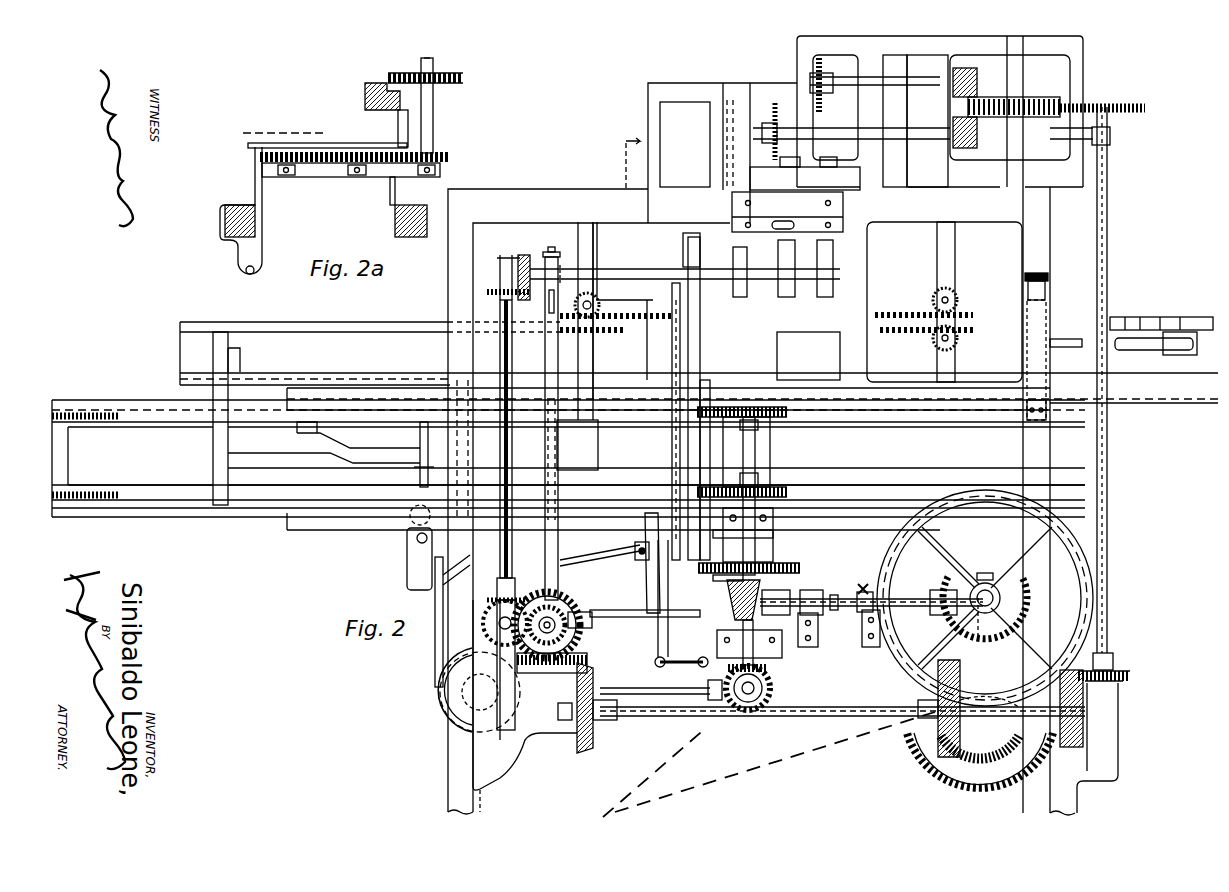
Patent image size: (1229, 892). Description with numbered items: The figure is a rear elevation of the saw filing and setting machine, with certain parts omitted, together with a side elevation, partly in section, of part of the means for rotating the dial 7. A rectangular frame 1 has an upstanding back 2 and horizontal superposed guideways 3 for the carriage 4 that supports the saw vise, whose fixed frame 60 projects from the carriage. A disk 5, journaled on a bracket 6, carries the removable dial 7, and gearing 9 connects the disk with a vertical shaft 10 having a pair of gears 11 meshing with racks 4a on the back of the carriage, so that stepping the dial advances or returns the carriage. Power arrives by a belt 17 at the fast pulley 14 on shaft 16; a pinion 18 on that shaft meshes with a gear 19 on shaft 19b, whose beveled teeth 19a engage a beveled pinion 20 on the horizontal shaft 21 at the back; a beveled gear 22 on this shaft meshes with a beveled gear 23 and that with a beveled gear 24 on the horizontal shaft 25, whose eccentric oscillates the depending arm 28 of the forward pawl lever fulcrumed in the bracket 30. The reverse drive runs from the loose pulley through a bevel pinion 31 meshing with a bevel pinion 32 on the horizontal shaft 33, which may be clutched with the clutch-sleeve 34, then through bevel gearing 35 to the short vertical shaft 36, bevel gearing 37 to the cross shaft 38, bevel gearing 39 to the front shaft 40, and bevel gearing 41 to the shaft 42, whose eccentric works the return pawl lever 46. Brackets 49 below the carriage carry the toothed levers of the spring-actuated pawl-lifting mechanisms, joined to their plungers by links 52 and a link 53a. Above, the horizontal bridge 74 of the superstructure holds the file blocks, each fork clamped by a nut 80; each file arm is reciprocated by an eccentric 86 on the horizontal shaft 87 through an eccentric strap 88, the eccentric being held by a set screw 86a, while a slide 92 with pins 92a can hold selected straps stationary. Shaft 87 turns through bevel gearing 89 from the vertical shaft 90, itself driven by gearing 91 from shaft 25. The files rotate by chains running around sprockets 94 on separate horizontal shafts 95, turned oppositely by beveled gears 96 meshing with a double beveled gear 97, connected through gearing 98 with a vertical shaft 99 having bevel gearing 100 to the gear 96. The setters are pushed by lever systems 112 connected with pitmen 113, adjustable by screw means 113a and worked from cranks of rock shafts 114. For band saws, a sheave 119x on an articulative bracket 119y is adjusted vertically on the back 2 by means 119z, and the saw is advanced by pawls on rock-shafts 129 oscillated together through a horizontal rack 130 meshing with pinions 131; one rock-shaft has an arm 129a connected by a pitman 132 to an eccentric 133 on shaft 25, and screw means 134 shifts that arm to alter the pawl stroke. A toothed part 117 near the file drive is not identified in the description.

In FIG. 2A, the rectangular frame 1 is at (255, 227).
In FIG. 2, the rectangular frame 1 is at (440, 597).
In FIG. 2, the upstanding back 2 is at (595, 192).
In FIG. 2A, the horizontal superposed guideways 3 is at (377, 108).
In FIG. 2, the carriage 4 is at (154, 514).
In FIG. 2, the racks 4a is at (108, 508).
In FIG. 2A, the disk 5 is at (318, 148).
In FIG. 2, the disk 5 is at (803, 565).
In FIG. 2A, the bracket 6 is at (262, 193).
In FIG. 2, the bracket 6 is at (770, 546).
In FIG. 2A, the removable dial 7 is at (246, 135).
In FIG. 2, the removable dial 7 is at (795, 556).
In FIG. 2A, the gearing 9 is at (410, 170).
In FIG. 2, the gearing 9 is at (737, 564).
In FIG. 2A, the vertical shaft 10 is at (433, 63).
In FIG. 2, the vertical shaft 10 is at (755, 461).
In FIG. 2A, the pair of gears 11 is at (463, 80).
In FIG. 2, the pair of gears 11 is at (787, 412).
In FIG. 2, the fast pulley 14 is at (902, 658).
In FIG. 2, the shaft 16 is at (1000, 598).
In FIG. 2, the belt 17 is at (840, 749).
In FIG. 2, the pinion 18 is at (984, 572).
In FIG. 2, the gear 19 is at (977, 761).
In FIG. 2, the beveled teeth 19a is at (998, 752).
In FIG. 2, the shaft 19b is at (1060, 745).
In FIG. 2, the beveled pinion 20 is at (940, 714).
In FIG. 2, the horizontal shaft 21 is at (807, 717).
In FIG. 2, the beveled gear 22 is at (595, 739).
In FIG. 2, the beveled gear 23 is at (589, 665).
In FIG. 2, the beveled gear 24 is at (581, 603).
In FIG. 2, the horizontal shaft 25 is at (582, 627).
In FIG. 2, the depending arm 28 is at (543, 548).
In FIG. 2, the bracket 30 is at (647, 578).
In FIG. 2, the bevel pinion 31 is at (985, 616).
In FIG. 2, the bevel pinion 32 is at (961, 548).
In FIG. 2, the horizontal shaft 33 is at (912, 598).
In FIG. 2, the clutch-sleeve 34 is at (859, 610).
In FIG. 2, the bevel gearing 35 is at (749, 644).
In FIG. 2, the short vertical shaft 36 is at (770, 666).
In FIG. 2, the bevel gearing 37 is at (770, 678).
In FIG. 2, the horizontal cross shaft 38 is at (770, 693).
In FIG. 2, the bevel gearing 39 is at (734, 705).
In FIG. 2, the shaft 40 is at (640, 690).
In FIG. 2, the bevel gearing 41 is at (438, 686).
In FIG. 2, the shaft 42 is at (434, 710).
In FIG. 2, the lever 46 is at (626, 542).
In FIG. 2, the bracket 49 is at (409, 579).
In FIG. 2, the links 52 is at (572, 561).
In FIG. 2, the link 53a is at (858, 580).
In FIG. 2, the fixed frame 60 is at (213, 448).
In FIG. 2, the horizontal bridge 74 is at (850, 146).
In FIG. 2, the nut 80 is at (800, 164).
In FIG. 2, the eccentric 86 is at (780, 256).
In FIG. 2, the set screw 86a is at (808, 356).
In FIG. 2, the horizontal shaft 87 is at (732, 285).
In FIG. 2, the eccentric strap 88 is at (835, 255).
In FIG. 2, the bevel gearing 89 is at (522, 299).
In FIG. 2, the vertical shaft 90 is at (509, 477).
In FIG. 2, the gearing 91 is at (482, 629).
In FIG. 2, the slide 92 is at (843, 210).
In FIG. 2, the pins 92a is at (785, 222).
In FIG. 2, the sprocket wheels 94 is at (812, 95).
In FIG. 2, the horizontal shafts 95 is at (920, 123).
In FIG. 2, the beveled gears 96 is at (978, 91).
In FIG. 2, the double beveled gear 97 is at (1044, 97).
In FIG. 2, the gearing 98 is at (1099, 106).
In FIG. 2, the vertical shaft 99 is at (1108, 292).
In FIG. 2, the bevel gearing 100 is at (1095, 705).
In FIG. 2, the lever systems 112 is at (702, 314).
In FIG. 2, the pitmen 113 is at (690, 372).
In FIG. 2, the screw means 113a is at (683, 262).
In FIG. 2, the rock shafts 114 is at (692, 668).
In FIG. 2, the rack 117 is at (668, 341).
In FIG. 2, the sheave 119x is at (1150, 318).
In FIG. 2, the articulative bracket 119y is at (1072, 335).
In FIG. 2, the adjusting means 119z is at (1048, 277).
In FIG. 2, the rock-shafts 129 is at (596, 308).
In FIG. 2, the arm 129a is at (570, 250).
In FIG. 2, the horizontal rack 130 is at (944, 302).
In FIG. 2, the pinions 131 is at (936, 294).
In FIG. 2, the pitman 132 is at (553, 437).
In FIG. 2, the eccentric 133 is at (570, 598).
In FIG. 2, the screw means 134 is at (546, 251).